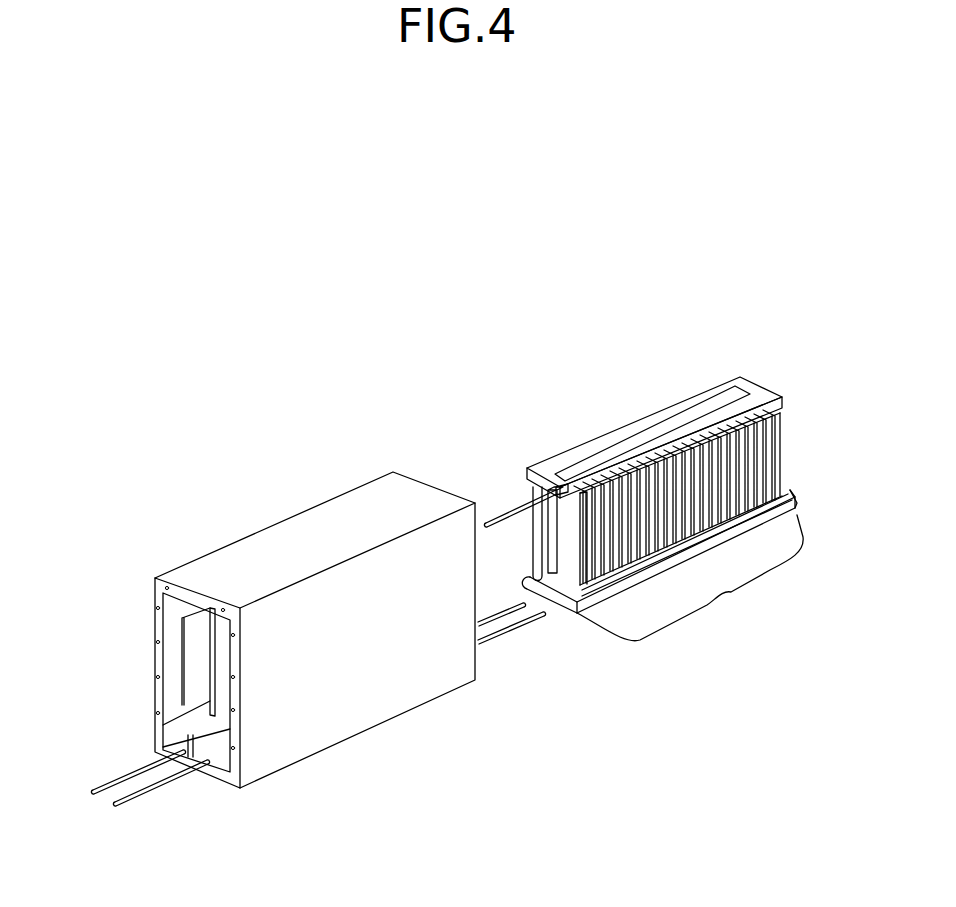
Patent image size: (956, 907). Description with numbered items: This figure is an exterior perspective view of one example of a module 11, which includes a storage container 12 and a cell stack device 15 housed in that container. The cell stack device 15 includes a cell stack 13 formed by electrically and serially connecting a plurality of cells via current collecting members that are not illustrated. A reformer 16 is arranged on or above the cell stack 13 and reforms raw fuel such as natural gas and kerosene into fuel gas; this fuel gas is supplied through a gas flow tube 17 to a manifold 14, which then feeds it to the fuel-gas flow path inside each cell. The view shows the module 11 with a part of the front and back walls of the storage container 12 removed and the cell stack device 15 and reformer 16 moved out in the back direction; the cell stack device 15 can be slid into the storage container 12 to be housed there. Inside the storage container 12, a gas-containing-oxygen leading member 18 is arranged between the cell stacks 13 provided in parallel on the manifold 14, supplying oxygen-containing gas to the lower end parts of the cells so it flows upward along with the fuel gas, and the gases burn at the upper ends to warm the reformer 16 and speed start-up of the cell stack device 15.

The module 11 is at (263, 262).
The storage container 12 is at (318, 520).
The cell stack 13 is at (731, 592).
The manifold 14 is at (595, 592).
The cell stack device 15 is at (688, 378).
The reformer 16 is at (538, 464).
The gas flow tube 17 is at (537, 487).
The gas-containing-oxygen leading member 18 is at (220, 627).